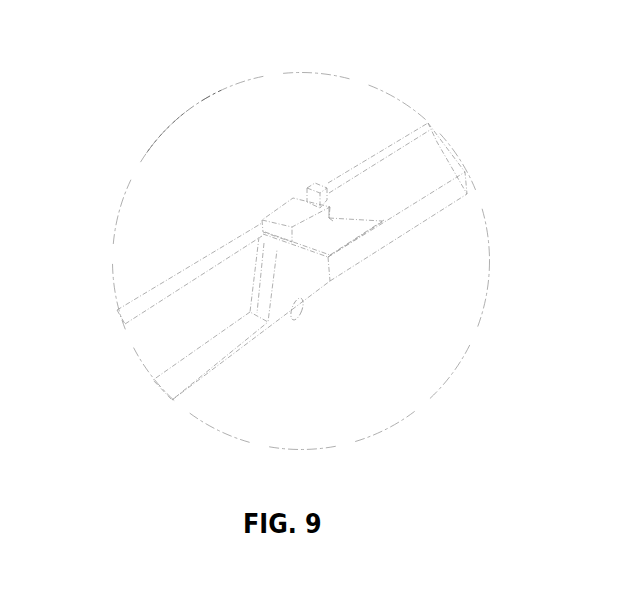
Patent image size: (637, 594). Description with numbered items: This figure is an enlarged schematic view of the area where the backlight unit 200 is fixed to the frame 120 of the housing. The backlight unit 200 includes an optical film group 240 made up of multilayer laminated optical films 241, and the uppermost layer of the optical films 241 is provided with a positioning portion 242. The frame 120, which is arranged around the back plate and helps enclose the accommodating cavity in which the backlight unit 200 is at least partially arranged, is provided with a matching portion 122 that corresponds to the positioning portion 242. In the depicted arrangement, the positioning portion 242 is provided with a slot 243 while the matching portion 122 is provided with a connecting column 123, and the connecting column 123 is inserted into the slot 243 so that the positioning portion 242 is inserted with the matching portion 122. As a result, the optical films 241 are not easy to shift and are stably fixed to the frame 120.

The frame 120 is at (218, 410).
The matching portion 122 is at (285, 285).
The connecting column 123 is at (307, 205).
The backlight unit 200 is at (140, 205).
The optical film group 240 is at (152, 168).
The optical film 241 is at (203, 125).
The positioning portion 242 is at (363, 226).
The slot 243 is at (328, 217).